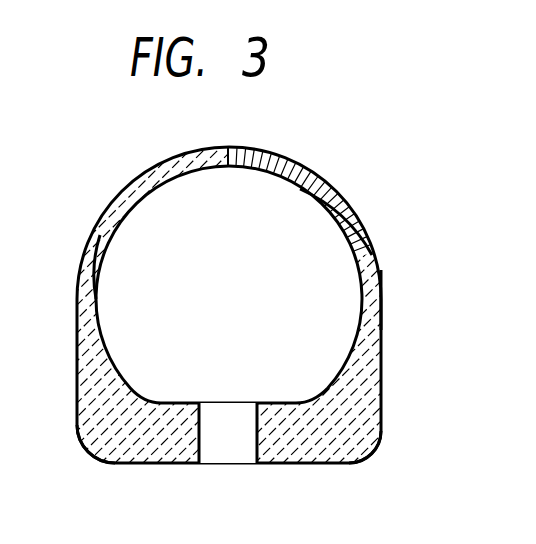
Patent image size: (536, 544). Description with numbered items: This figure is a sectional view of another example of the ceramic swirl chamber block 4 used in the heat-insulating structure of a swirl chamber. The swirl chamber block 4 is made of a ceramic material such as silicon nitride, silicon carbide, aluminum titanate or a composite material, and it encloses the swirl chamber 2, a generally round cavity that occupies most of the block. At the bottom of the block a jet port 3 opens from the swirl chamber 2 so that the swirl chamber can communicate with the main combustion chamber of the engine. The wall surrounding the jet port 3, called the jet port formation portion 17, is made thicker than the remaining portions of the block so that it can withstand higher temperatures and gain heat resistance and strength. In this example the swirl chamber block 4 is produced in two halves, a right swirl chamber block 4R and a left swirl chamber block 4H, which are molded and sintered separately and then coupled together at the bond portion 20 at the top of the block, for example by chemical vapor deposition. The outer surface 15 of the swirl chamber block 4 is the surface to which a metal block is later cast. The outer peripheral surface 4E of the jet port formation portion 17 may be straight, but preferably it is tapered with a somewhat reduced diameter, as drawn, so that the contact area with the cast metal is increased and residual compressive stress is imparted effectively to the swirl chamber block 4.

The swirl chamber 2 is at (257, 274).
The jet port 3 is at (241, 418).
The swirl chamber block 4 is at (337, 187).
The right swirl chamber block 4R is at (360, 221).
The left swirl chamber block 4H is at (95, 254).
The outer peripheral surface 4E is at (88, 453).
The outer surface 15 is at (383, 296).
The jet port formation portion 17 is at (157, 432).
The bond portion 20 is at (238, 151).